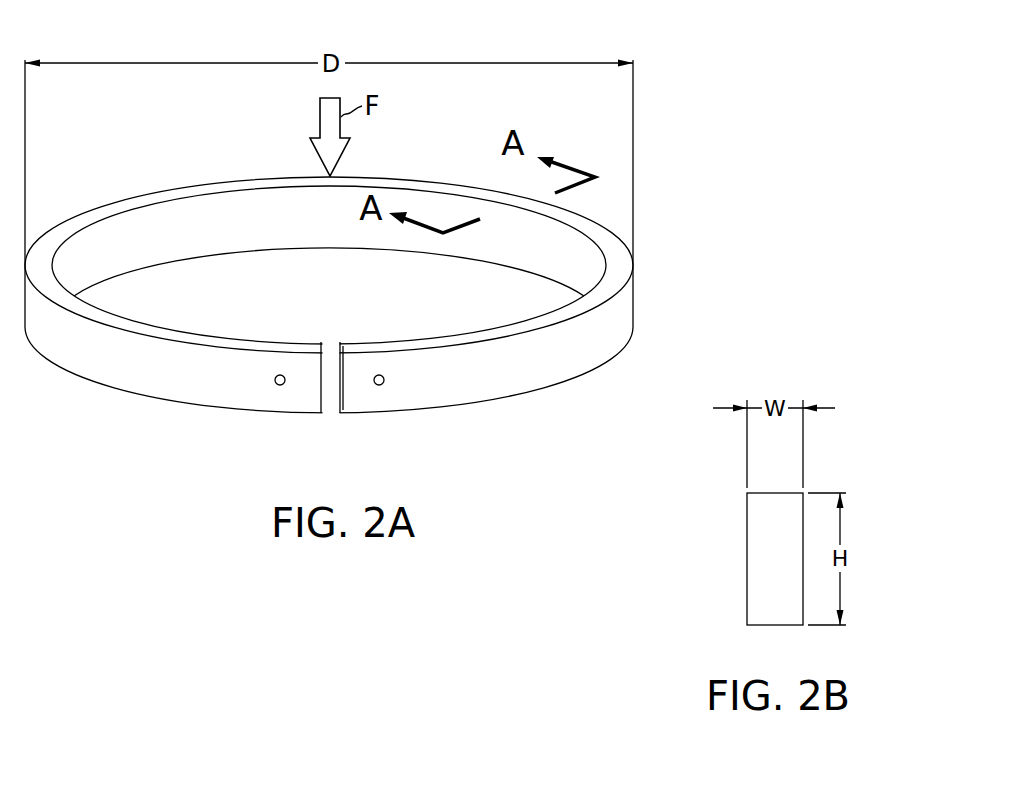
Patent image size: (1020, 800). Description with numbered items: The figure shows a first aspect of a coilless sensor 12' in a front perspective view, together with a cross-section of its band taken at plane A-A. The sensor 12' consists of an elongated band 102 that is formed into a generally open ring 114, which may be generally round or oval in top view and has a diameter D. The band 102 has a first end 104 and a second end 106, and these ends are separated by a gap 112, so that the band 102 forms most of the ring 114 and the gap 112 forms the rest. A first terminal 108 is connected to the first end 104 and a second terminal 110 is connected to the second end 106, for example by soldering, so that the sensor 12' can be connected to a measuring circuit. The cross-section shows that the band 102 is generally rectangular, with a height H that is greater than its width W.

In FIG. 2A, the coilless sensor 12' is at (388, 283).
In FIG. 2A, the elongated band 102 is at (329, 248).
In FIG. 2B, the elongated band 102 is at (768, 492).
In FIG. 2A, the first end 104 is at (268, 343).
In FIG. 2A, the second end 106 is at (364, 343).
In FIG. 2A, the first terminal 108 is at (355, 437).
In FIG. 2A, the second terminal 110 is at (383, 384).
In FIG. 2A, the gap 112 is at (316, 313).
In FIG. 2A, the open ring 114 is at (120, 172).